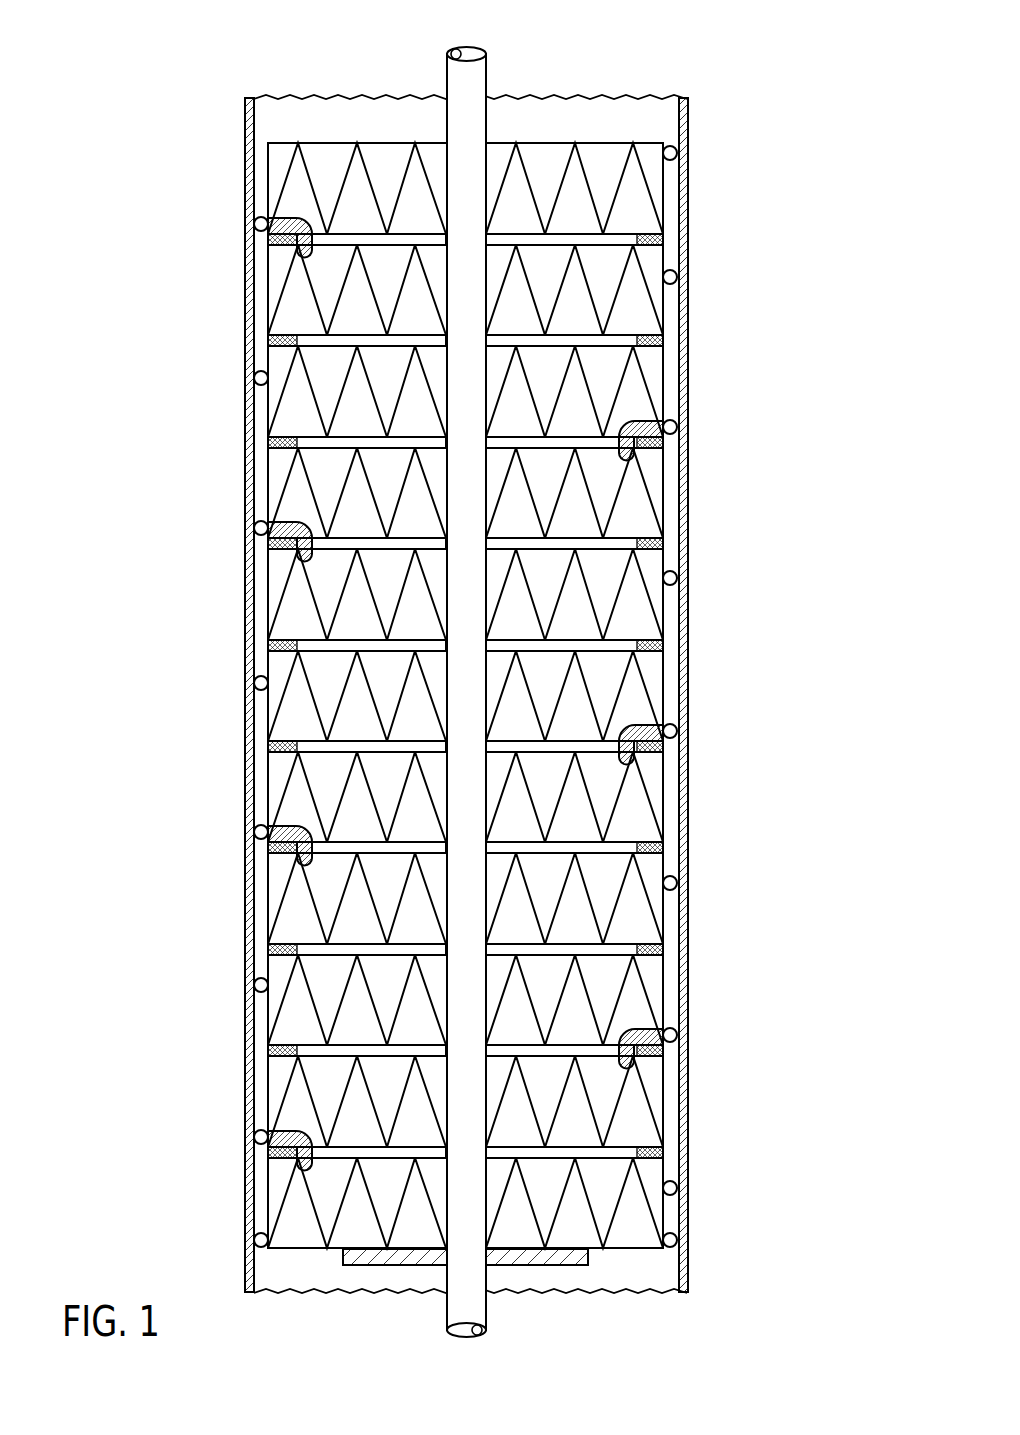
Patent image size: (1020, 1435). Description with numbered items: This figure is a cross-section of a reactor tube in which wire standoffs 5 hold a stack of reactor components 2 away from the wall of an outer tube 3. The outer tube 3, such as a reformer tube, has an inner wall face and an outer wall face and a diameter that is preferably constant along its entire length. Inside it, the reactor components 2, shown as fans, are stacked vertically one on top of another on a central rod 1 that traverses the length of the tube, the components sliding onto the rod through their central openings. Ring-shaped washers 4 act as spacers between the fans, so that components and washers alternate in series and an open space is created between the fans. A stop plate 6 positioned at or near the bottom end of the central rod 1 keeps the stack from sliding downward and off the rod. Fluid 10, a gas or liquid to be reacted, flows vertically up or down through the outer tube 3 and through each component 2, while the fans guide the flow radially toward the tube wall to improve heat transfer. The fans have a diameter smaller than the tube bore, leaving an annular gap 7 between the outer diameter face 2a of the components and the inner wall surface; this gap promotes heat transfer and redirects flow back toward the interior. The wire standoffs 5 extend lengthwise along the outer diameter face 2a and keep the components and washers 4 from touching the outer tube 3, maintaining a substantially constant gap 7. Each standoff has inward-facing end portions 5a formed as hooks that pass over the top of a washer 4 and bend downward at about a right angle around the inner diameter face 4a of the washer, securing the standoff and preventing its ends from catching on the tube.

The fluid 10 is at (318, 72).
The central rod 1 is at (487, 61).
The reactor components 2 is at (608, 150).
The outer diameter face 2a is at (668, 192).
The outer tube 3 is at (690, 134).
The washers 4 is at (280, 238).
The inner diameter face 4a is at (300, 333).
The wire standoffs 5 is at (680, 277).
The end portions 5a is at (652, 420).
The stop plate 6 is at (546, 1256).
The gap 7 is at (258, 172).